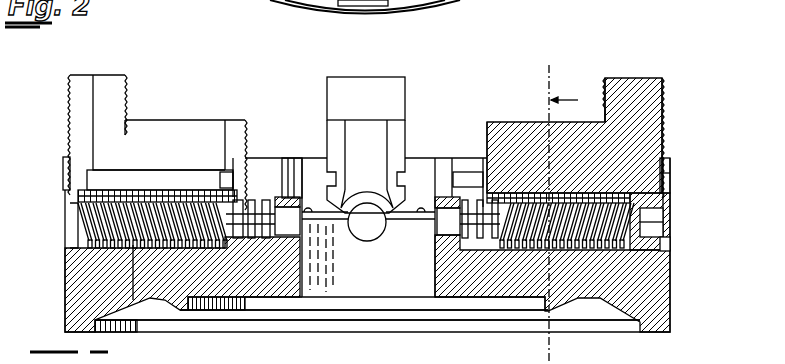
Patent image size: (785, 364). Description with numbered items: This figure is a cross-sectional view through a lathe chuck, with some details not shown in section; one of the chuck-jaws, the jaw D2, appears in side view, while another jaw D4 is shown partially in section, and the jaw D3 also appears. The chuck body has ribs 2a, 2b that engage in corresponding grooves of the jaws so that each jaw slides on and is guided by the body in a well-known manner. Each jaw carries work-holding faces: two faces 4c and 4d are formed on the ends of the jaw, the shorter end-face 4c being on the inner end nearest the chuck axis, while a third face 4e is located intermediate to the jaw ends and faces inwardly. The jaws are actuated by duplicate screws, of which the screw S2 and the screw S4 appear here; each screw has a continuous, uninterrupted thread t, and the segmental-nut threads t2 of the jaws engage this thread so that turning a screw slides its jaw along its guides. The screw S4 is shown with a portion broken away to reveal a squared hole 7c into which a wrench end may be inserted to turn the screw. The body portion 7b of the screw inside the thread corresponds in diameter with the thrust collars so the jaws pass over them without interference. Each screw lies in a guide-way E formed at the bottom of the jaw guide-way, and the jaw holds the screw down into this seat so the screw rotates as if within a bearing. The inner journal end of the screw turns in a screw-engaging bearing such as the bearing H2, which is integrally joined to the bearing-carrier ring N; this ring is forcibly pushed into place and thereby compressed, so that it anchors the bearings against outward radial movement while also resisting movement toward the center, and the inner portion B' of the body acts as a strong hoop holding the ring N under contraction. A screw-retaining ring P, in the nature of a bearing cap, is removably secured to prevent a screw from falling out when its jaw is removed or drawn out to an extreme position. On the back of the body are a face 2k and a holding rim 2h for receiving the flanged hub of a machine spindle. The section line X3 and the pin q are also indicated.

The chuck-jaw D2 is at (165, 132).
The chuck-jaw D3 is at (385, 88).
The chuck-jaw D4 is at (628, 82).
The screw thread t is at (65, 248).
The segmental-nut thread t2 is at (63, 172).
The jaw-actuating screw S2 is at (78, 222).
The jaw-actuating screw S4 is at (663, 252).
The face 2k is at (277, 257).
The pin q is at (421, 212).
The screw-retaining ring P is at (422, 216).
The rib 2b is at (330, 182).
The rib 2a is at (402, 183).
The work-holding face 4c is at (487, 127).
The work-holding face 4e is at (605, 92).
The work-holding face 4d is at (662, 112).
The section line X3 is at (550, 90).
The squared hole 7c is at (663, 213).
The guide-way E is at (670, 245).
The holding rim 2h is at (188, 300).
The body portion 7b is at (133, 300).
The screw-engaging bearing H2 is at (280, 300).
The bearing-carrier ring N is at (445, 298).
The inner portion of body B' is at (367, 331).